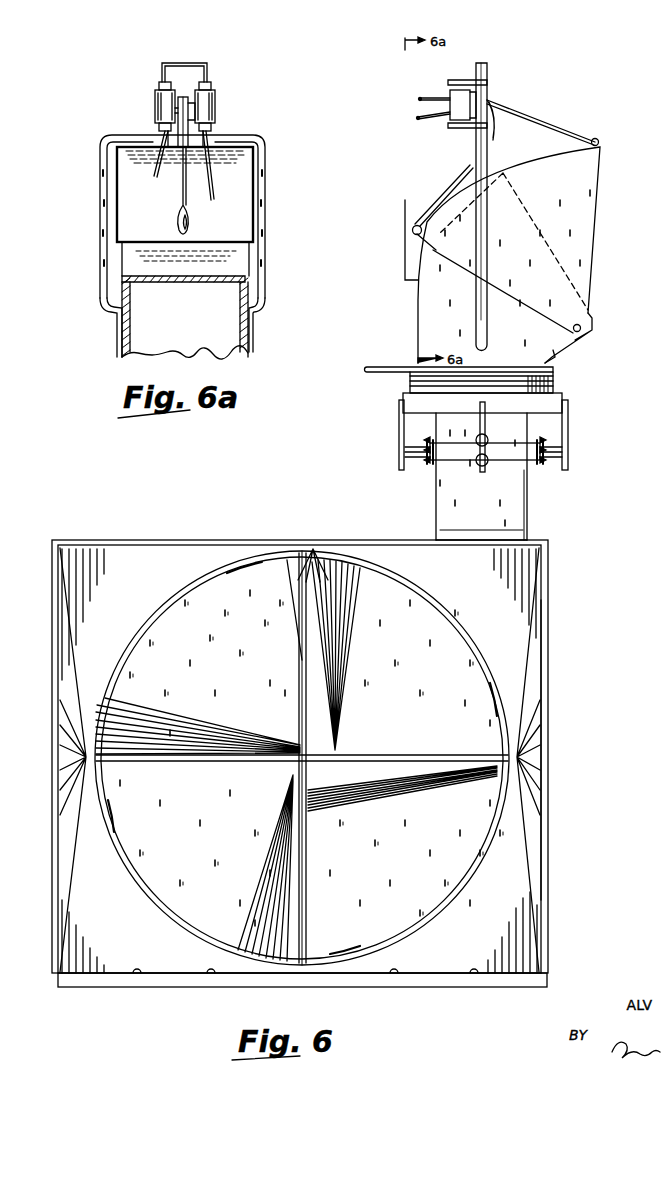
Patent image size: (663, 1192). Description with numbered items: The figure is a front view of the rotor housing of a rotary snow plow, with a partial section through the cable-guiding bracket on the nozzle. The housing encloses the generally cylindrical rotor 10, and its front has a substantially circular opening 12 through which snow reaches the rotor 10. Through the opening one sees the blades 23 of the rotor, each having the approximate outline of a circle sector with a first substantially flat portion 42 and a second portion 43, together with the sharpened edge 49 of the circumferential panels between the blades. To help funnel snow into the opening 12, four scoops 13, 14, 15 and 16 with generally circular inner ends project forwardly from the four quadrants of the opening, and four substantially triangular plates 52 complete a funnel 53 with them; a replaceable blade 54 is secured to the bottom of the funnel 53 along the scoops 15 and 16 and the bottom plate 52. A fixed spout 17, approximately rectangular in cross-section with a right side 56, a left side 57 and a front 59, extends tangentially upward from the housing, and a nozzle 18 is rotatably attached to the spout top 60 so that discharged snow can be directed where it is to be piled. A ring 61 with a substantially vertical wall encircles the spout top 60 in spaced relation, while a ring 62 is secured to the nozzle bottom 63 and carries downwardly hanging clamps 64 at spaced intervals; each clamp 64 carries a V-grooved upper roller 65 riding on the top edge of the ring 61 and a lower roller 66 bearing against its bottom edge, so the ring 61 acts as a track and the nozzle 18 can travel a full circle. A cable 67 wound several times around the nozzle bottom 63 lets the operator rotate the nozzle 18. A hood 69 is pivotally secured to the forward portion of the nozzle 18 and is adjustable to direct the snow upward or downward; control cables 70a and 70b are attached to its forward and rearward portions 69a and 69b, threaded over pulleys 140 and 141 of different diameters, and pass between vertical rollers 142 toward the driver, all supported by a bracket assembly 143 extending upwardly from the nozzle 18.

In FIG. 6, the rotor 10 is at (502, 817).
In FIG. 6, the front opening 12 is at (475, 880).
In FIG. 6, the scoop 13 is at (200, 556).
In FIG. 6, the scoop 14 is at (523, 577).
In FIG. 6, the scoop 15 is at (485, 952).
In FIG. 6, the scoop 16 is at (177, 965).
In FIG. 6, the spout 17 is at (526, 520).
In FIG. 6A, the nozzle 18 is at (210, 283).
In FIG. 6, the nozzle 18 is at (540, 345).
In FIG. 6, the blade 23 is at (155, 625).
In FIG. 6, the first substantially flat portion 42 is at (182, 598).
In FIG. 6, the blade portion 43 is at (336, 557).
In FIG. 6, the edge of circumferential panel 49 is at (259, 556).
In FIG. 6, the triangular plate 52 is at (313, 546).
In FIG. 6, the funnel 53 is at (550, 727).
In FIG. 6, the replaceable blade 54 is at (335, 977).
In FIG. 6, the right side of spout 56 is at (530, 533).
In FIG. 6, the left side of spout 57 is at (437, 493).
In FIG. 6, the front of spout 59 is at (513, 505).
In FIG. 6, the spout top 60 is at (533, 424).
In FIG. 6, the ring 61 is at (423, 450).
In FIG. 6, the ring 62 is at (562, 393).
In FIG. 6, the nozzle bottom 63 is at (553, 382).
In FIG. 6, the clamp 64 is at (400, 407).
In FIG. 6, the upper roller 65 is at (427, 442).
In FIG. 6, the lower roller 66 is at (427, 465).
In FIG. 6, the cable 67 is at (372, 366).
In FIG. 6A, the hood 69 is at (253, 200).
In FIG. 6, the hood 69 is at (602, 178).
In FIG. 6, the forward portion of hood 69a is at (603, 148).
In FIG. 6A, the rearward portion of hood 69b is at (240, 243).
In FIG. 6, the rearward portion of hood 69b is at (420, 242).
In FIG. 6A, the control cable 70a is at (160, 135).
In FIG. 6, the control cable 70a is at (420, 100).
In FIG. 6A, the control cable 70b is at (188, 180).
In FIG. 6, the control cable 70b is at (418, 118).
In FIG. 6A, the pulley 140 is at (157, 110).
In FIG. 6, the pulley 140 is at (487, 102).
In FIG. 6A, the pulley 141 is at (197, 116).
In FIG. 6, the pulley 141 is at (492, 110).
In FIG. 6A, the vertical roller 142 is at (155, 93).
In FIG. 6, the vertical roller 142 is at (448, 92).
In FIG. 6A, the bracket assembly 143 is at (184, 63).
In FIG. 6, the bracket assembly 143 is at (488, 250).